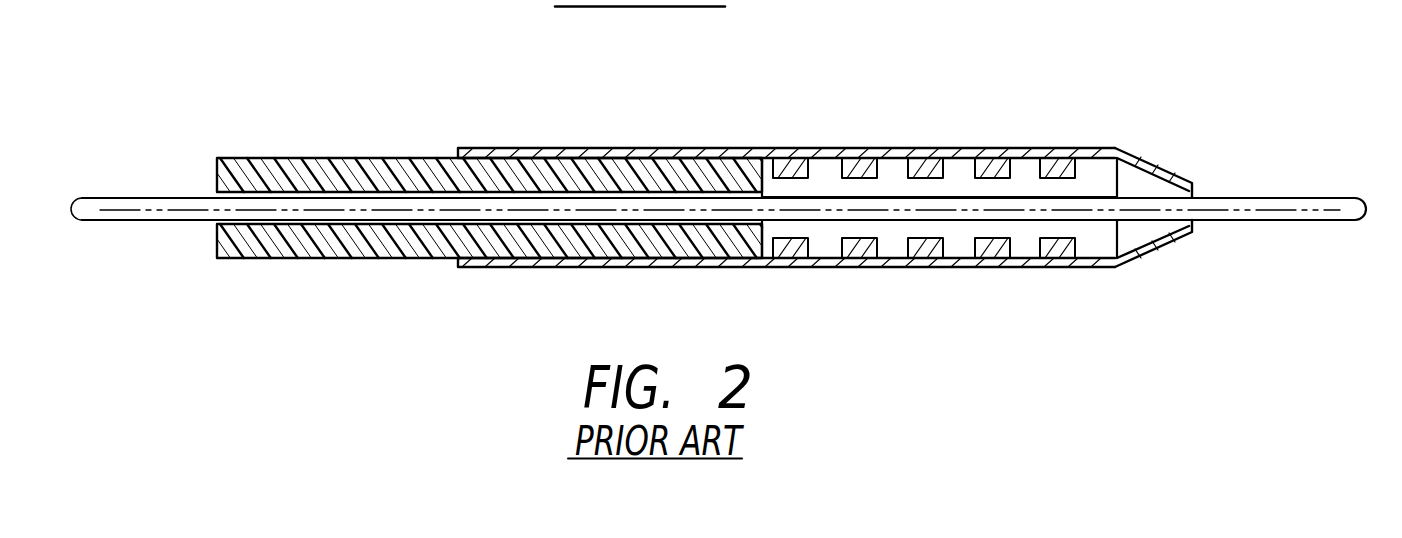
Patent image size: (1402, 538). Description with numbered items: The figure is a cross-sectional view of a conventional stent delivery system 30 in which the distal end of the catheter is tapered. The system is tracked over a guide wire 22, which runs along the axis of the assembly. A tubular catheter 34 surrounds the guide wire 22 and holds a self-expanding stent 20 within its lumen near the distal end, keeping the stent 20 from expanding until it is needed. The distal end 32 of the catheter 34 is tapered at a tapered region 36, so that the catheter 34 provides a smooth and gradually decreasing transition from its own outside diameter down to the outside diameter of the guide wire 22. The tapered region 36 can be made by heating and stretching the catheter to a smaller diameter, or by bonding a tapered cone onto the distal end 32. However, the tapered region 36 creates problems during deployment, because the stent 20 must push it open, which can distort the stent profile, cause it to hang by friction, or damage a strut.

The self-expanding stent 20 is at (930, 157).
The guide wire 22 is at (1312, 207).
The stent delivery system 30 is at (378, 120).
The distal end 32 is at (1112, 268).
The catheter 34 is at (1046, 156).
The tapered region 36 is at (1147, 162).